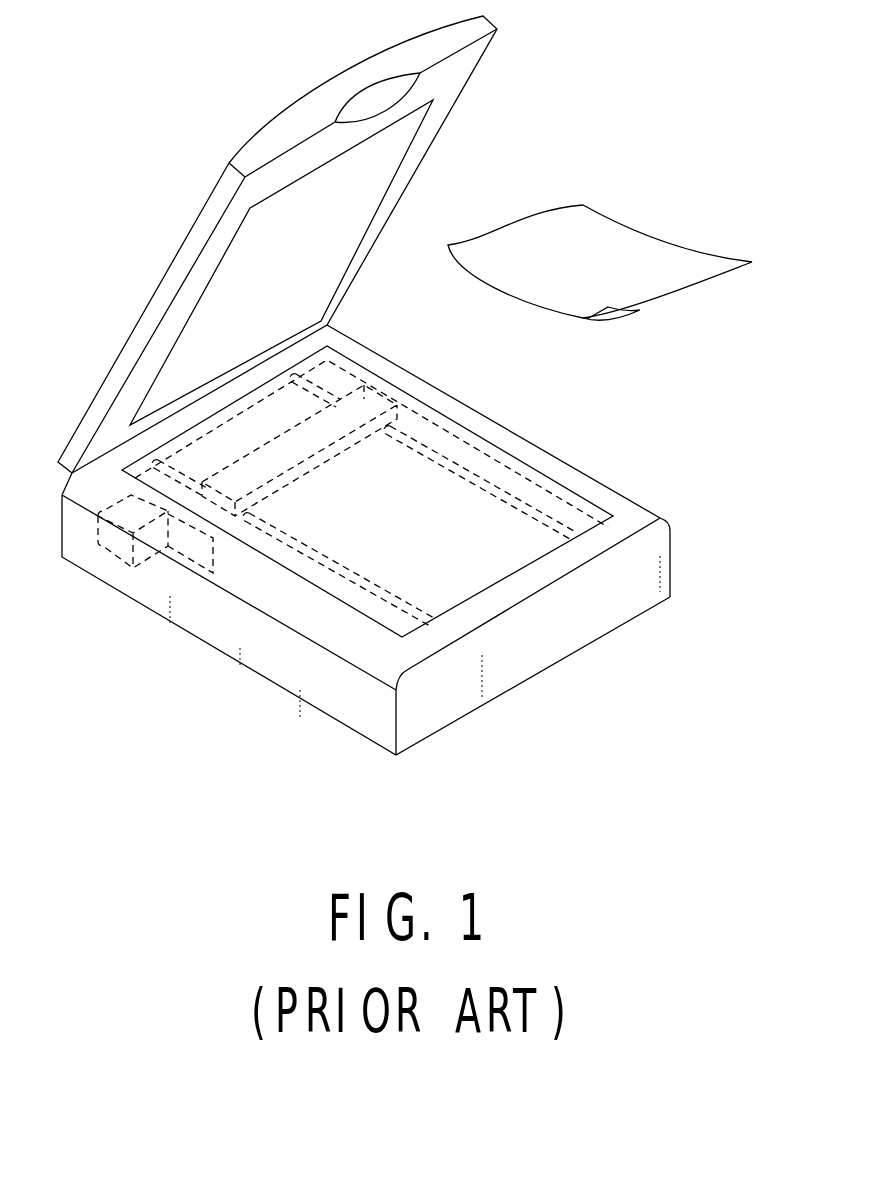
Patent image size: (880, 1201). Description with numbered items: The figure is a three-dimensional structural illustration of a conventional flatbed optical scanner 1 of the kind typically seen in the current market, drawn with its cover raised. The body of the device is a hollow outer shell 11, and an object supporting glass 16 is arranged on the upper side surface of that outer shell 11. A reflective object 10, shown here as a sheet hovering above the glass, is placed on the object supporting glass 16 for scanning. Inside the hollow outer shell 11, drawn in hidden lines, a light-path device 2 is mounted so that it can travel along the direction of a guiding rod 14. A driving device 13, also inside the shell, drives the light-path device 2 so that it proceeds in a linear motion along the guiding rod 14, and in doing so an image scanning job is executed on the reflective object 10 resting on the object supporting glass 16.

The scanner 1 is at (385, 403).
The light-path device 2 is at (373, 392).
The reflective object 10 is at (600, 225).
The outer shell 11 is at (627, 515).
The driving device 13 is at (83, 650).
The guiding rod 14 is at (510, 438).
The object supporting glass 16 is at (457, 424).